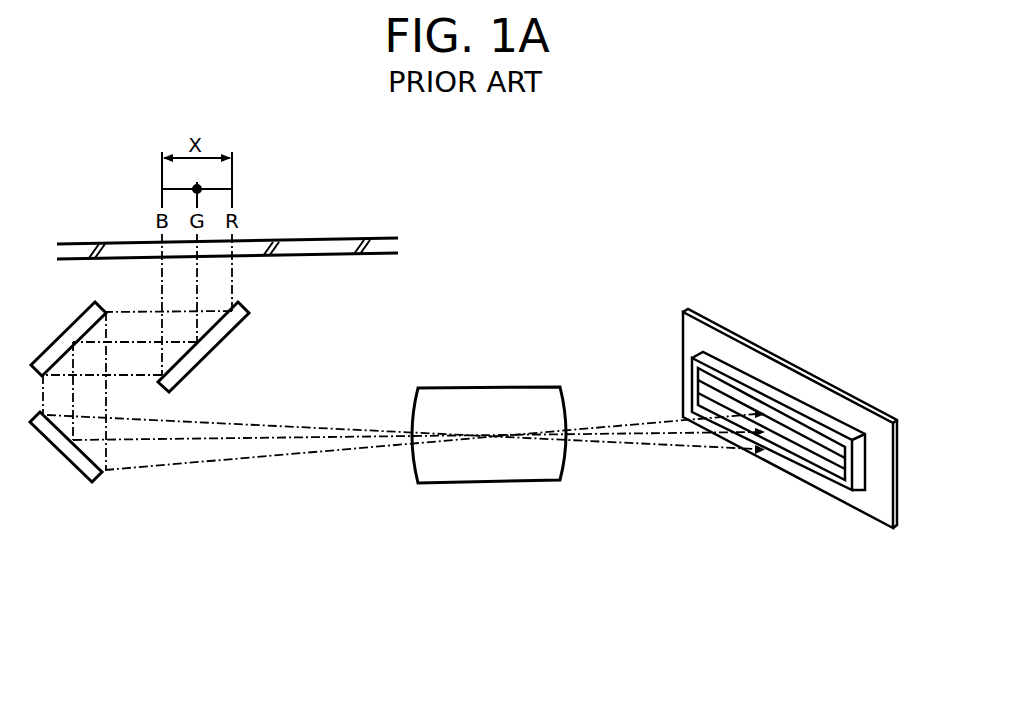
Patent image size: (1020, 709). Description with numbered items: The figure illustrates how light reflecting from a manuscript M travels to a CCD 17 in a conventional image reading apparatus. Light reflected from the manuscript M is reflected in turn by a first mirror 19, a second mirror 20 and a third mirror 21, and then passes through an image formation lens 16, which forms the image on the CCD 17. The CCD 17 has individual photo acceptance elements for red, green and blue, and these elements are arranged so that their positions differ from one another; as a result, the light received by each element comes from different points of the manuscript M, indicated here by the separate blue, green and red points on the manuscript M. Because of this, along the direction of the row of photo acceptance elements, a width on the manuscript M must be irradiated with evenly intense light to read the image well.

The image formation lens 16 is at (528, 387).
The CCD 17 is at (787, 346).
The first mirror 19 is at (208, 353).
The second mirror 20 is at (64, 337).
The third mirror 21 is at (62, 457).
The manuscript M is at (363, 238).